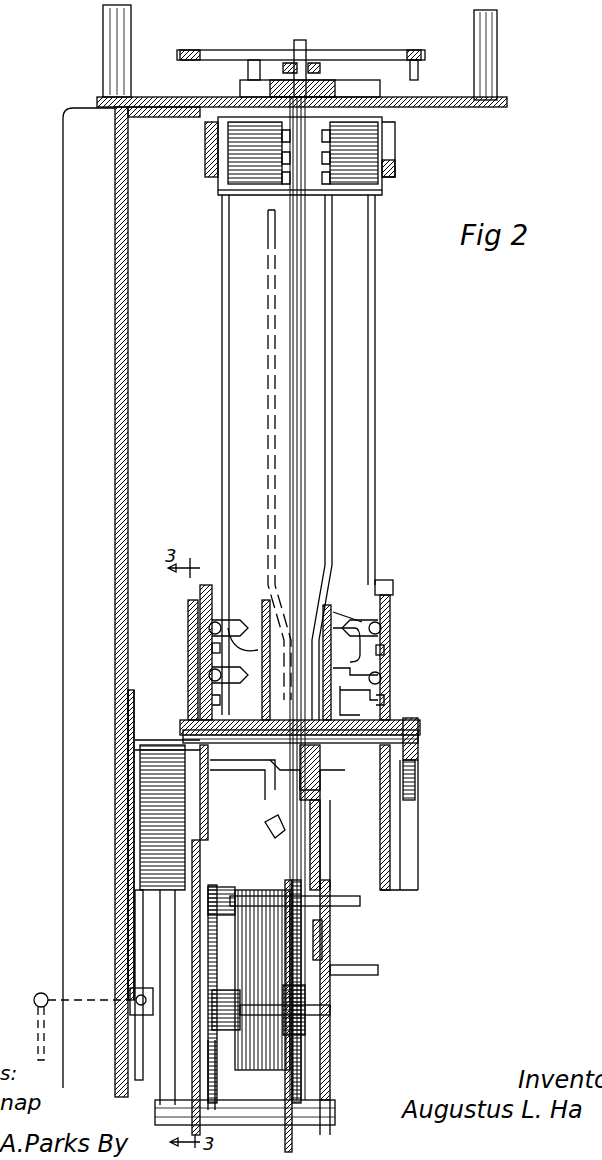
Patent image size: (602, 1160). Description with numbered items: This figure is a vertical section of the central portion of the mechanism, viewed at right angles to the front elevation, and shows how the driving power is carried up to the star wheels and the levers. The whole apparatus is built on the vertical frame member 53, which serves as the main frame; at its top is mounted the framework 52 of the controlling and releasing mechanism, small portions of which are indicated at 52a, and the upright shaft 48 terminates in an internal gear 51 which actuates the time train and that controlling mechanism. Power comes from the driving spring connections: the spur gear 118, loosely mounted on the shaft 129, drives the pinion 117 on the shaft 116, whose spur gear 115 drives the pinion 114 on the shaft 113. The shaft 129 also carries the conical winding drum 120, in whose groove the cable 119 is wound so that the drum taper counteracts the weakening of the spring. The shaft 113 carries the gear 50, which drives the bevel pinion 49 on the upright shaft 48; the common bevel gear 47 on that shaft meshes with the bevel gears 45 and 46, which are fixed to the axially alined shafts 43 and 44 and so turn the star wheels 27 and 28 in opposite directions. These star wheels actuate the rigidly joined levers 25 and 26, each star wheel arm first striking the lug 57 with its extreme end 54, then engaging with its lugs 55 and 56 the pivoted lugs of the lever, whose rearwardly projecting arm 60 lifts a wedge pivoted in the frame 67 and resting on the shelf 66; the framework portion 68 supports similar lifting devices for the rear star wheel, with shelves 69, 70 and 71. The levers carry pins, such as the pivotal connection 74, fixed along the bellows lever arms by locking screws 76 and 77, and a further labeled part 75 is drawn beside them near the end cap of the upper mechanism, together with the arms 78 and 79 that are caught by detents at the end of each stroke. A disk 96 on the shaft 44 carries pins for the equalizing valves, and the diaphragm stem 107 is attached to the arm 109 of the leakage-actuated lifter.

The controlling mechanism portions 52a is at (305, 45).
The framework 52 is at (507, 103).
The internal gear 51 is at (423, 60).
The vertical frame member 53 is at (128, 318).
The pivotal connection 74 is at (335, 183).
The end cap 75 is at (393, 135).
The locking screw 76 is at (395, 165).
The locking screw 77 is at (212, 160).
The arm 78 is at (332, 250).
The arm 79 is at (270, 222).
The lever 26 is at (222, 352).
The lever 25 is at (375, 360).
The framework portion 68 is at (262, 640).
The frame 67 is at (327, 605).
The lug 57 is at (393, 585).
The arm end 54 is at (200, 592).
The rearwardly projecting arm 60 is at (350, 622).
The star wheel 28 is at (212, 628).
The shelf 69 is at (237, 641).
The shelf 66 is at (347, 637).
The lug 55 is at (384, 650).
The star wheel 27 is at (350, 668).
The shelf 71 is at (212, 678).
The lug 56 is at (352, 705).
The shelf 70 is at (362, 685).
The shaft 43 is at (415, 718).
The disk 96 is at (115, 718).
The shaft 44 is at (230, 760).
The bevel gear 45 is at (319, 772).
The bevel gear 46 is at (233, 940).
The bevel gear 47 is at (266, 818).
The upright shaft 48 is at (330, 810).
The bevel pinion 49 is at (322, 832).
The gear 50 is at (330, 855).
The pinion 114 is at (215, 915).
The shaft 113 is at (355, 906).
The spur gear 115 is at (200, 935).
The arm 109 is at (90, 995).
The stem 107 is at (38, 1028).
The shaft 129 is at (335, 975).
The pinion 117 is at (305, 1020).
The shaft 116 is at (236, 1030).
The spur gear 118 is at (301, 1072).
The cable 119 is at (292, 1150).
The conical winding drum 120 is at (268, 1100).